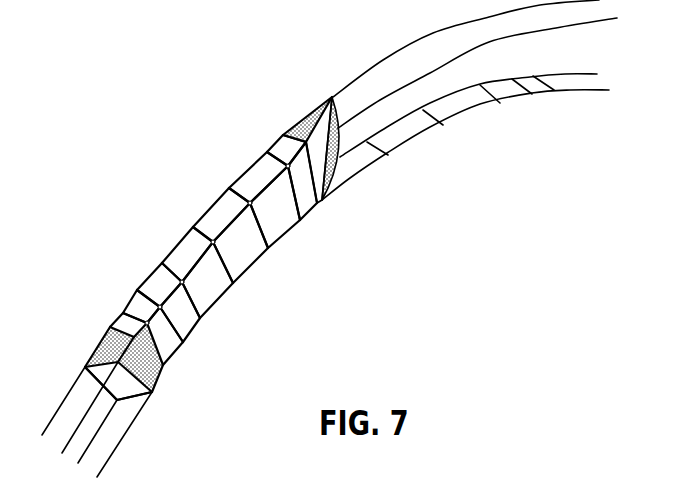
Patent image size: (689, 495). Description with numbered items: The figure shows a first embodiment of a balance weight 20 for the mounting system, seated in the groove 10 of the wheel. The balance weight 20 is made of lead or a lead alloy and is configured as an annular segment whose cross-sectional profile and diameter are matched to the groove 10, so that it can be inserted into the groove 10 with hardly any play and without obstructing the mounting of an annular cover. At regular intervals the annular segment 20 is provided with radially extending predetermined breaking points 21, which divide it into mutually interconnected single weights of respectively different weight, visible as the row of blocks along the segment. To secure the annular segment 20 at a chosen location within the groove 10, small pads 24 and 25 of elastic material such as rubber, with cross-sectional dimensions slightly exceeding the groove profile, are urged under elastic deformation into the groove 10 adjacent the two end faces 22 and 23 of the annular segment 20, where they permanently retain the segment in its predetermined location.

The groove 10 is at (412, 128).
The balance weight 20 is at (237, 259).
The predetermined breaking points 21 is at (197, 303).
The end face 22 is at (147, 358).
The end face 23 is at (305, 140).
The pad 24 is at (128, 383).
The pad 25 is at (330, 197).